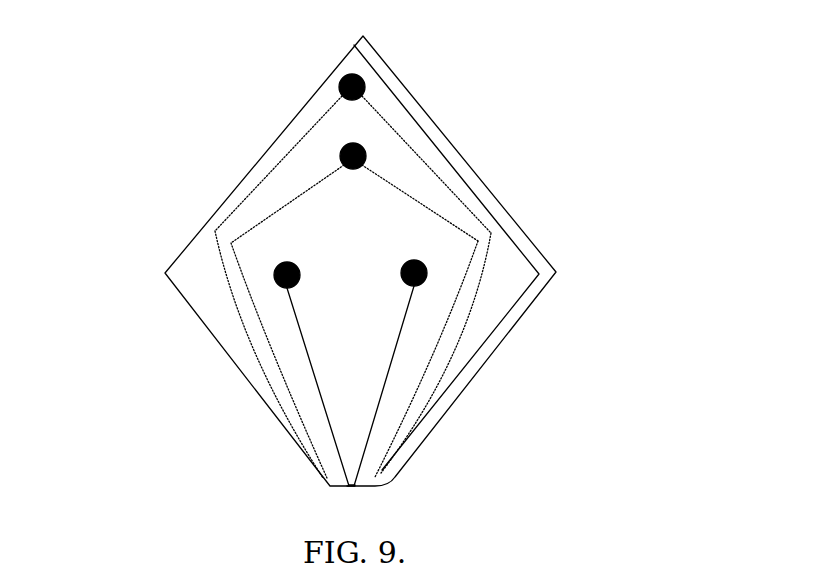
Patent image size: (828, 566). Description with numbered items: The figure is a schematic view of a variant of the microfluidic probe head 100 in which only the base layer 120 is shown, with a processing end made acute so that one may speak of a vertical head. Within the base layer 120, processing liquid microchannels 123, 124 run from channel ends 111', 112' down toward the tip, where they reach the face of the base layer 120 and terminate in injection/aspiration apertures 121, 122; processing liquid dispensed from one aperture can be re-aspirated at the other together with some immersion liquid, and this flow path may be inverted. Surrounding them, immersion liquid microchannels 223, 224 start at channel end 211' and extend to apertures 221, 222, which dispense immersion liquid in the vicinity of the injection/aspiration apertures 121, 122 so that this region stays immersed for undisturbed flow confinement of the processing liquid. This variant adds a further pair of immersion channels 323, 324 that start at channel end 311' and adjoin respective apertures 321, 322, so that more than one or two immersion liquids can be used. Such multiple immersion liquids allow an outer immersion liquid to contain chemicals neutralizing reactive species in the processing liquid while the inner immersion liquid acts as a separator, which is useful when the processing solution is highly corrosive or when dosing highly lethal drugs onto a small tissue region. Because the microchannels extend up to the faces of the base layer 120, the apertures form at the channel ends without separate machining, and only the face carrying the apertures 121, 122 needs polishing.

The head 100 is at (572, 412).
The base layer 120 is at (497, 268).
The channel end 311' is at (429, 62).
The channel end 211' is at (429, 130).
The channel end 111' is at (189, 252).
The channel end 112' is at (486, 228).
The processing liquid microchannel 123 is at (303, 363).
The processing liquid microchannel 124 is at (390, 360).
The aperture 121 is at (350, 485).
The aperture 122 is at (407, 501).
The immersion channel 323 is at (245, 352).
The aperture 321 is at (260, 405).
The immersion channel 324 is at (477, 279).
The aperture 322 is at (440, 403).
The immersion liquid microchannel 223 is at (260, 327).
The aperture 221 is at (313, 472).
The immersion liquid microchannel 224 is at (442, 330).
The aperture 222 is at (380, 470).